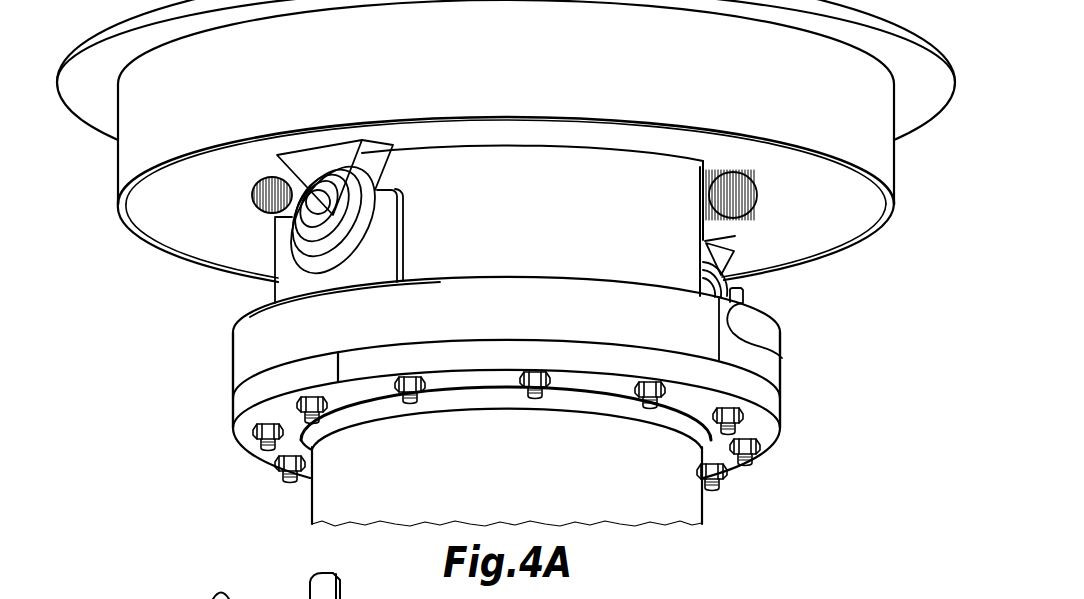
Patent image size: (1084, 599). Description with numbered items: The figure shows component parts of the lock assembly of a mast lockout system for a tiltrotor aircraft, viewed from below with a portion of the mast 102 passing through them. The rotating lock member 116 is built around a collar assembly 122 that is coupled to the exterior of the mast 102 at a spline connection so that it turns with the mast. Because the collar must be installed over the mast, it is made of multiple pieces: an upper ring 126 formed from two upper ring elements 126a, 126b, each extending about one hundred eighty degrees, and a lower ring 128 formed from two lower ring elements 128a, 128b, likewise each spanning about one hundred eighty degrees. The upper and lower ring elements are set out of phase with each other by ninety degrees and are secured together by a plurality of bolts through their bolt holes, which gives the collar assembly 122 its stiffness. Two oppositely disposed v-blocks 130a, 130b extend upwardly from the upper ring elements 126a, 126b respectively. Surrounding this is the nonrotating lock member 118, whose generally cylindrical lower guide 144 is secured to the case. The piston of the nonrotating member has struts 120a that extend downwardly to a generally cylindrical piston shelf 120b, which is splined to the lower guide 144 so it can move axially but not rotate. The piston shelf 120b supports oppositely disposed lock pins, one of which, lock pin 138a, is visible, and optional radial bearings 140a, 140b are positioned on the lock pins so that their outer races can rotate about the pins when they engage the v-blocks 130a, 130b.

The lower guide 144 is at (490, 66).
The nonrotating lock member 118 is at (117, 166).
The mast 102 is at (488, 217).
The struts 120a is at (750, 217).
The piston shelf 120b is at (785, 250).
The lock pin 138a is at (313, 203).
The radial bearing 140a is at (290, 240).
The radial bearing 140b is at (733, 282).
The v-block 130a is at (292, 268).
The v-block 130b is at (781, 345).
The collar assembly 122 is at (502, 384).
The upper ring 126 is at (489, 309).
The upper ring element 126a is at (232, 367).
The upper ring element 126b is at (773, 365).
The lower ring 128 is at (490, 363).
The lower ring element 128a is at (232, 407).
The lower ring element 128b is at (773, 407).
The rotating lock member 116 is at (771, 459).